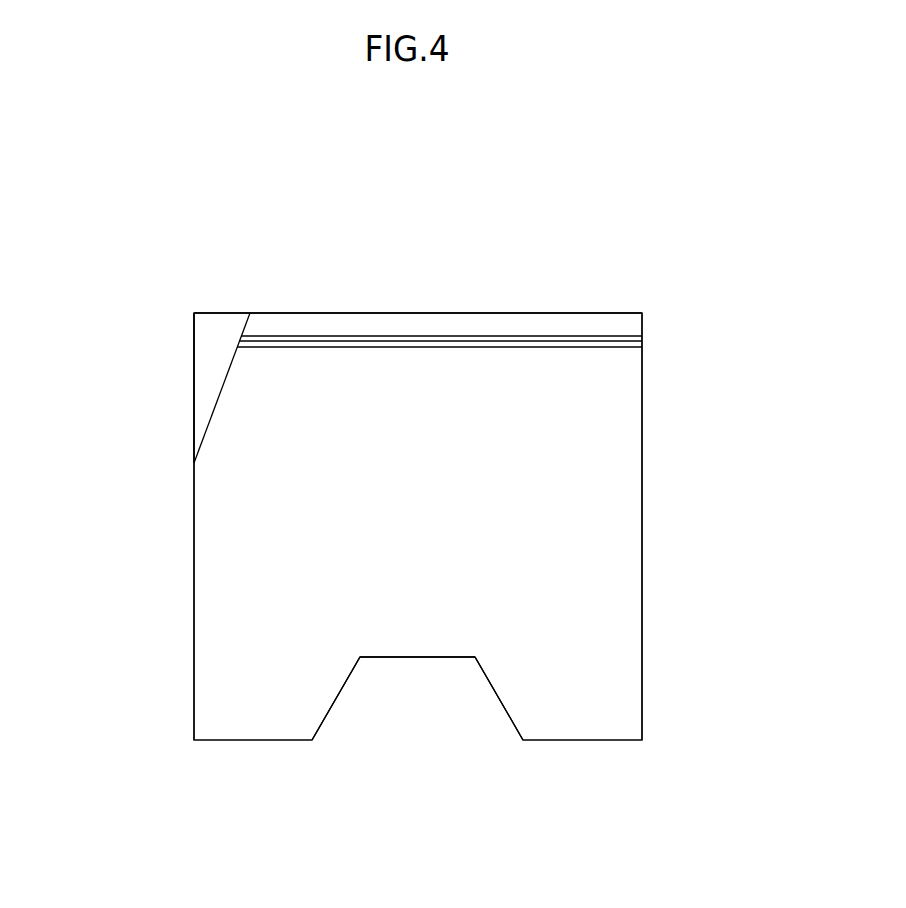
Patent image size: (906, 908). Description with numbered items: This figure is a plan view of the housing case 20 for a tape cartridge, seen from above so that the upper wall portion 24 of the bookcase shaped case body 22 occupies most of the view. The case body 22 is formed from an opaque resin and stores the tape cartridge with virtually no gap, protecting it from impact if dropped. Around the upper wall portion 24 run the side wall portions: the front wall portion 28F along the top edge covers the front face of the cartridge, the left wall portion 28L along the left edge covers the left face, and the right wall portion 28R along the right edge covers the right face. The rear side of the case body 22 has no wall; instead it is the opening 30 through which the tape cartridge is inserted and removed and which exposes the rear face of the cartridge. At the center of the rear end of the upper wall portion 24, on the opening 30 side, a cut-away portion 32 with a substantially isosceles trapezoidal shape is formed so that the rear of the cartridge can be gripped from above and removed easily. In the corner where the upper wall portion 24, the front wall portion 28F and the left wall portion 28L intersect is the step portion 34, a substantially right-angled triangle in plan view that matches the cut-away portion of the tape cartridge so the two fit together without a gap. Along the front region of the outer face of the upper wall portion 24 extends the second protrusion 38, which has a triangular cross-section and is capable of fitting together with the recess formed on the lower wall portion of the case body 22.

The housing case 20 is at (557, 243).
The case body 22 is at (194, 425).
The upper wall portion 24 is at (595, 467).
The front wall portion 28F is at (422, 313).
The left wall portion 28L is at (194, 580).
The right wall portion 28R is at (642, 580).
The opening 30 is at (312, 740).
The cut-away portion 32 is at (418, 657).
The step portion 34 is at (221, 332).
The second protrusion 38 is at (632, 341).